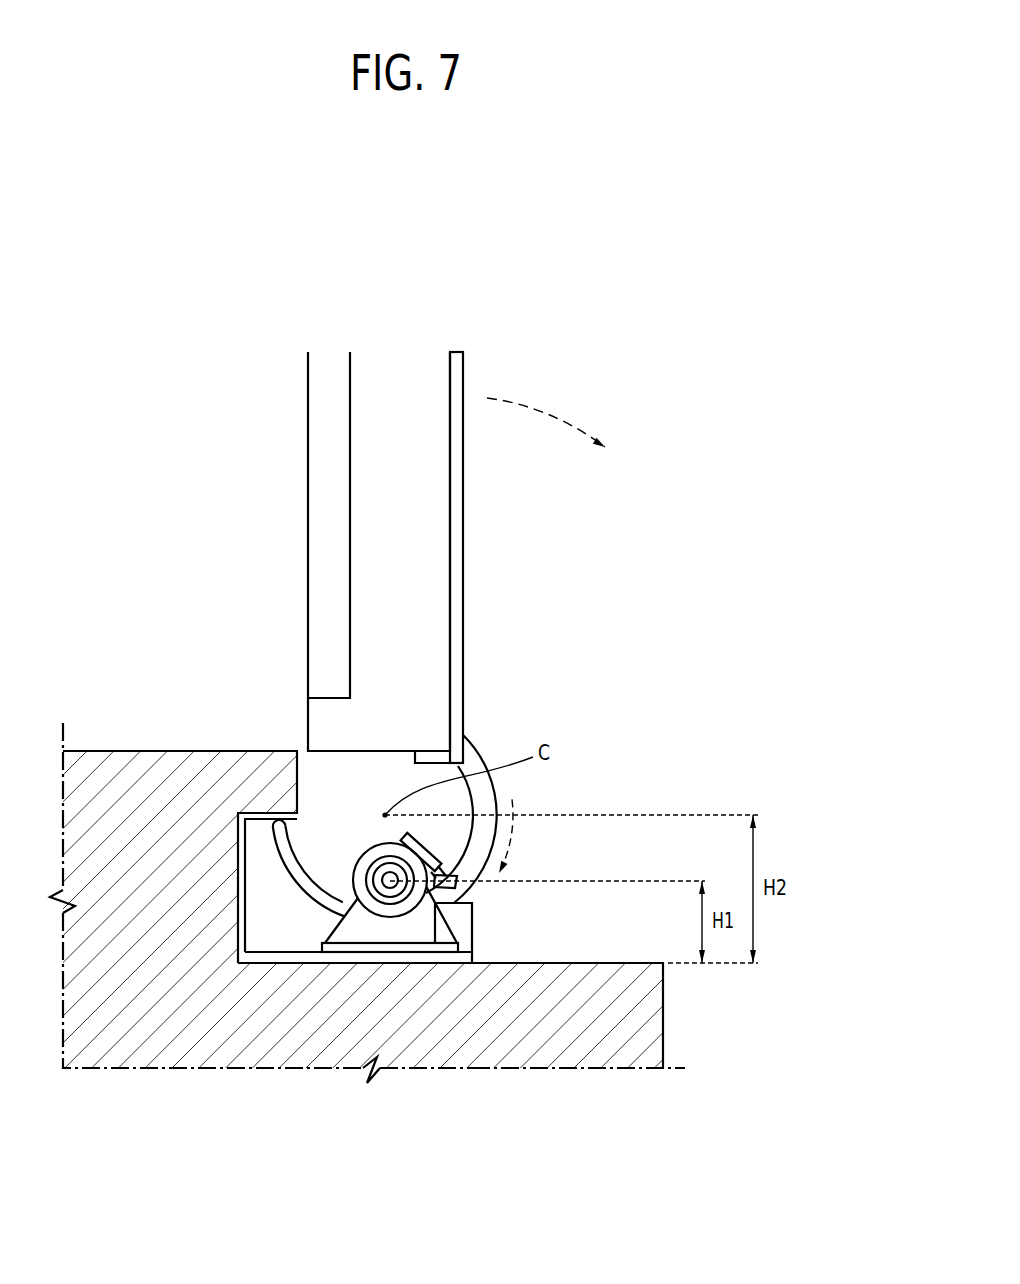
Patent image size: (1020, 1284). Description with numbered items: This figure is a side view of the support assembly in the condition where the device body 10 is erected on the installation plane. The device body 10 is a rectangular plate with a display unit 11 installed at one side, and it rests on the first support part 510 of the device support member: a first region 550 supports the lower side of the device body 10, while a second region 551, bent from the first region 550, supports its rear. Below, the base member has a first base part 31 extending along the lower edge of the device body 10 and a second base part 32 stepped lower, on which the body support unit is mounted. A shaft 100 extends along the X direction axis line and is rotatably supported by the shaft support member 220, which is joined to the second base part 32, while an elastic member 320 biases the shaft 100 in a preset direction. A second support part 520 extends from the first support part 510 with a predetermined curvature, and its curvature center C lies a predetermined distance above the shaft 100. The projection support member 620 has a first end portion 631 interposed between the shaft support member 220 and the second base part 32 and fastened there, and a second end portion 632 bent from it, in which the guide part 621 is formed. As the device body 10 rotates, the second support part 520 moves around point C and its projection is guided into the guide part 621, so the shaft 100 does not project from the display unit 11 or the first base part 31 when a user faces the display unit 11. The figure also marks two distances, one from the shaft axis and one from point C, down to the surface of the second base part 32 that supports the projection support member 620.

The device body 10 is at (382, 538).
The display unit 11 is at (307, 455).
The first base part 31 is at (147, 753).
The second base part 32 is at (573, 963).
The shaft 100 is at (390, 880).
The shaft support member 220 is at (427, 923).
The elastic member 320 is at (365, 893).
The first support part 510 is at (510, 627).
The second support part 520 is at (487, 832).
The first region 550 is at (432, 755).
The second region 551 is at (460, 620).
The projection support member 620 is at (407, 980).
The guide part 621 is at (256, 836).
The first end portion 631 is at (463, 953).
The second end portion 632 is at (275, 927).